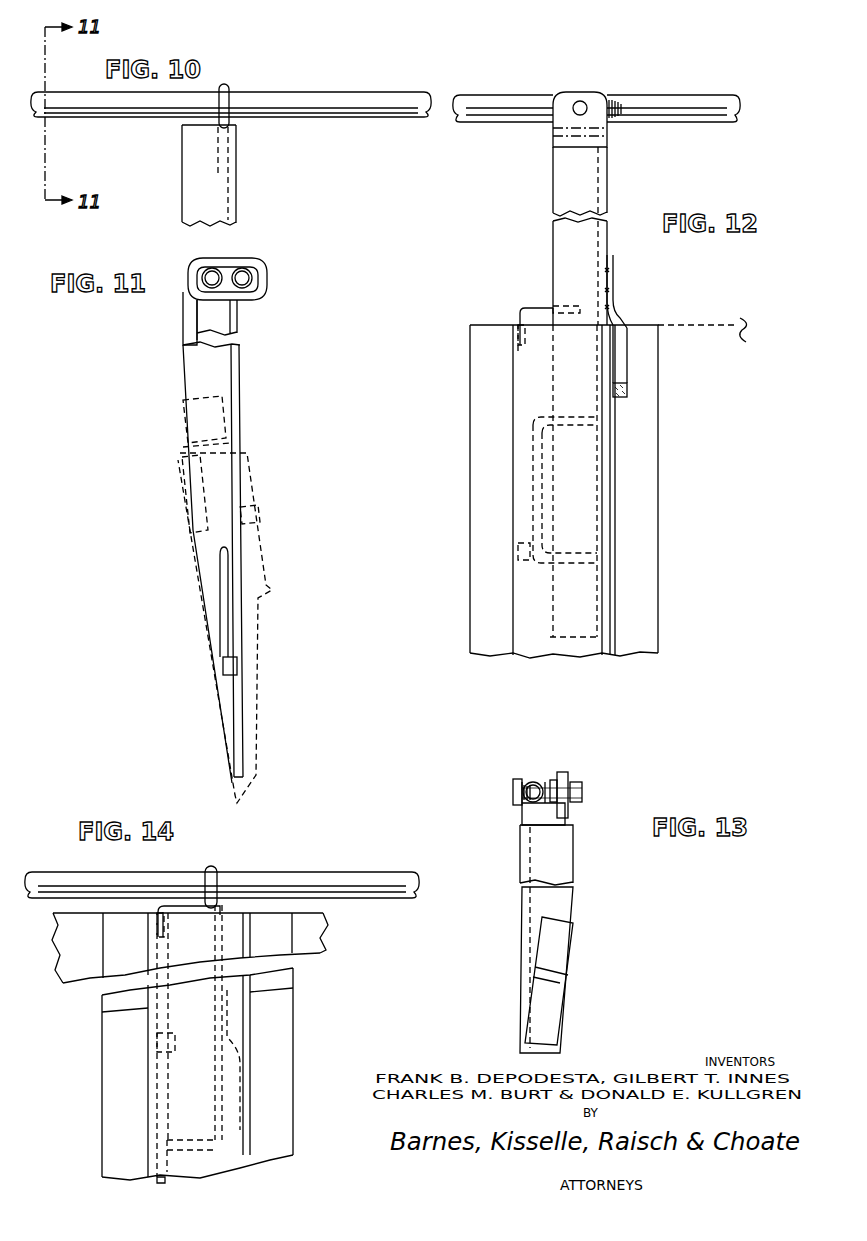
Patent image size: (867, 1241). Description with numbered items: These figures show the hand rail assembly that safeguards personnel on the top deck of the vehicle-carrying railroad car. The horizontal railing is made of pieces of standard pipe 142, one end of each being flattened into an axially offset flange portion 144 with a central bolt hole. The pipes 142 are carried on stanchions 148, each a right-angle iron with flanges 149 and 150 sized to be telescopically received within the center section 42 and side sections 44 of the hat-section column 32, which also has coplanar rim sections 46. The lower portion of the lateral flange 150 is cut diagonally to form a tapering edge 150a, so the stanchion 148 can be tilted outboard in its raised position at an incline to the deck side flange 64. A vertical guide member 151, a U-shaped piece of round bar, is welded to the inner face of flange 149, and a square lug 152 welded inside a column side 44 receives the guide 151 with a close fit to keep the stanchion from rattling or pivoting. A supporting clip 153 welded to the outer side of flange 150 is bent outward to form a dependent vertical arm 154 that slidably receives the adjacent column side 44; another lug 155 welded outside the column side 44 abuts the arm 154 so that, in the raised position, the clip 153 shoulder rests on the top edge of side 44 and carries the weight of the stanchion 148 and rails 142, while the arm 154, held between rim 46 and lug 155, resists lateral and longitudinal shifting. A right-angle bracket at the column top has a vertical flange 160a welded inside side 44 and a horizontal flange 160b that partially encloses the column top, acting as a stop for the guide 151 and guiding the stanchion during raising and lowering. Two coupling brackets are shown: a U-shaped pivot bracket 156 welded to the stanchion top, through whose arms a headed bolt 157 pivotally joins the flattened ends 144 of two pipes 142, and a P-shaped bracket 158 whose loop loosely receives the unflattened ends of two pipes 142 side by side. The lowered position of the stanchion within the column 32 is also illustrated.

In FIG. 12, the column 32 is at (664, 545).
In FIG. 11, the column 32 is at (256, 478).
In FIG. 14, the column 32 is at (300, 1115).
In FIG. 12, the center section 42 is at (553, 653).
In FIG. 12, the side section 44 is at (617, 428).
In FIG. 14, the side section 44 is at (102, 1020).
In FIG. 12, the rim or flange section 46 is at (478, 512).
In FIG. 14, the vertical flange 64 is at (318, 948).
In FIG. 10, the hand rail pipe 142 is at (413, 98).
In FIG. 12, the hand rail pipe 142 is at (497, 97).
In FIG. 11, the hand rail pipe 142 is at (252, 280).
In FIG. 13, the hand rail pipe 142 is at (523, 782).
In FIG. 14, the hand rail pipe 142 is at (302, 886).
In FIG. 12, the axially offset flange portion 144 is at (618, 97).
In FIG. 13, the axially offset flange portion 144 is at (546, 785).
In FIG. 12, the stanchion 148 is at (548, 244).
In FIG. 13, the stanchion 148 is at (580, 902).
In FIG. 10, the flange 149 is at (182, 186).
In FIG. 12, the flange 149 is at (562, 279).
In FIG. 11, the flange 149 is at (240, 380).
In FIG. 13, the flange 149 is at (535, 872).
In FIG. 10, the lateral flange 150 is at (232, 188).
In FIG. 12, the lateral flange 150 is at (600, 196).
In FIG. 11, the lateral flange 150 is at (188, 383).
In FIG. 13, the lateral flange 150 is at (535, 847).
In FIG. 11, the tapering edge 150a is at (200, 610).
In FIG. 13, the tapering edge 150a is at (568, 1027).
In FIG. 12, the vertical guide member 151 is at (538, 440).
In FIG. 11, the vertical guide member 151 is at (220, 563).
In FIG. 14, the vertical guide member 151 is at (160, 1145).
In FIG. 12, the square lug 152 is at (518, 556).
In FIG. 11, the square lug 152 is at (222, 669).
In FIG. 14, the square lug 152 is at (160, 1048).
In FIG. 12, the supporting clip 153 is at (615, 315).
In FIG. 13, the supporting clip 153 is at (562, 972).
In FIG. 12, the vertical arm 154 is at (630, 340).
In FIG. 11, the vertical arm 154 is at (190, 496).
In FIG. 13, the vertical arm 154 is at (550, 1007).
In FIG. 14, the vertical arm 154 is at (237, 1097).
In FIG. 12, the lug 155 is at (630, 388).
In FIG. 11, the lug 155 is at (258, 512).
In FIG. 12, the U-shaped pivot bracket 156 is at (553, 132).
In FIG. 13, the U-shaped pivot bracket 156 is at (568, 772).
In FIG. 12, the headed bolt 157 is at (583, 100).
In FIG. 13, the headed bolt 157 is at (582, 793).
In FIG. 10, the P-shaped bracket 158 is at (227, 88).
In FIG. 11, the P-shaped bracket 158 is at (266, 288).
In FIG. 14, the P-shaped bracket 158 is at (216, 874).
In FIG. 12, the vertical flange 160a is at (515, 336).
In FIG. 14, the vertical flange 160a is at (157, 925).
In FIG. 12, the horizontal flange 160b is at (520, 310).
In FIG. 11, the horizontal flange 160b is at (182, 455).
In FIG. 14, the horizontal flange 160b is at (158, 905).